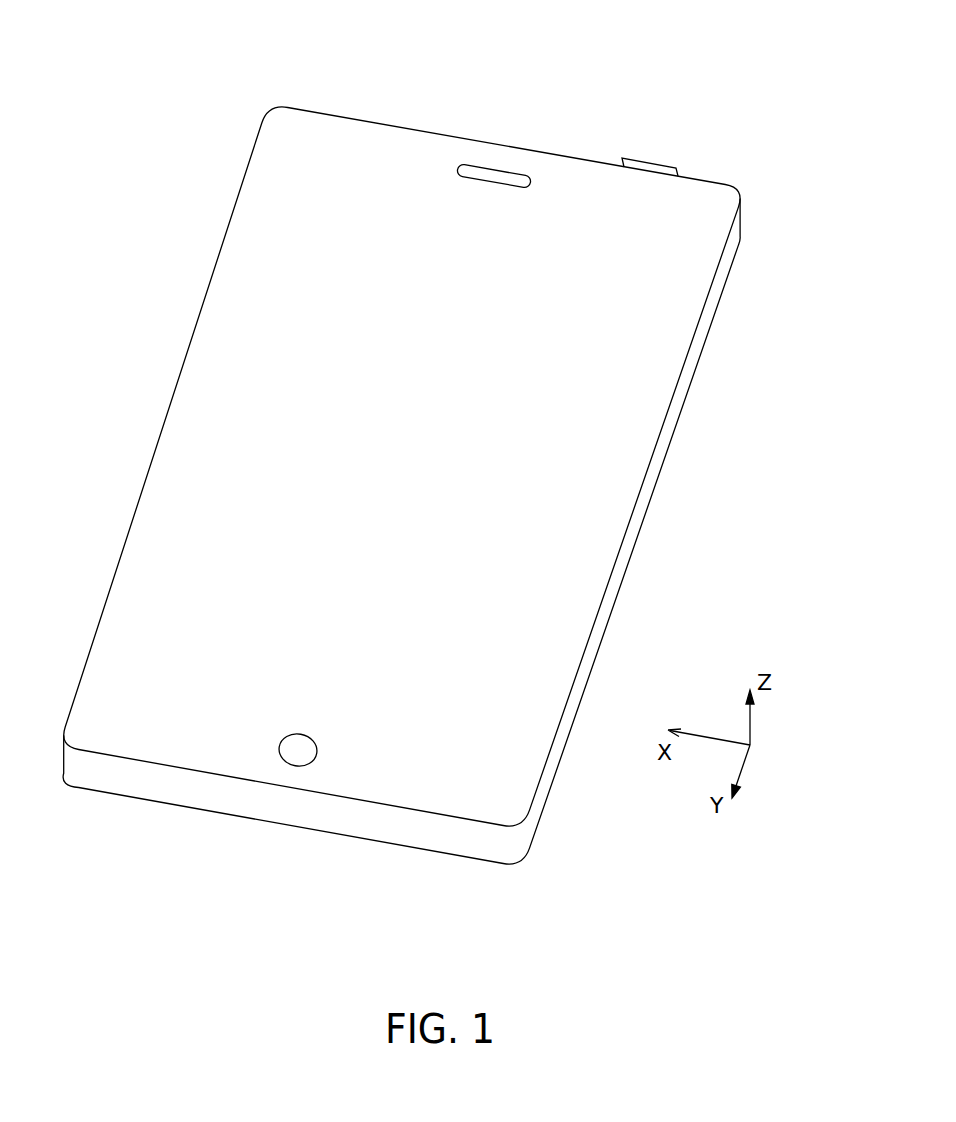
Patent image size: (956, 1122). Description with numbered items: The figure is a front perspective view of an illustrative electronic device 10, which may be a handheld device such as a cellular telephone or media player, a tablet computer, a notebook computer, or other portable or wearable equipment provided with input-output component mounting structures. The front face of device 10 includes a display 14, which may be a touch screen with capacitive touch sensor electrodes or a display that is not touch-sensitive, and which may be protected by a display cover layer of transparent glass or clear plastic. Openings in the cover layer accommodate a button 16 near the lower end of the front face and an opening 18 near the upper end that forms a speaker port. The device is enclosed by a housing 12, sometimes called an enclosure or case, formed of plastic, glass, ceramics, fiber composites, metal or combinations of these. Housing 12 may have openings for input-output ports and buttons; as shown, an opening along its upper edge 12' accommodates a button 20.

The electronic device 10 is at (449, 452).
The housing 12 is at (435, 472).
The upper edge 12' is at (409, 453).
The display 14 is at (567, 458).
The button 16 is at (310, 763).
The opening 18 is at (498, 175).
The button 20 is at (675, 160).